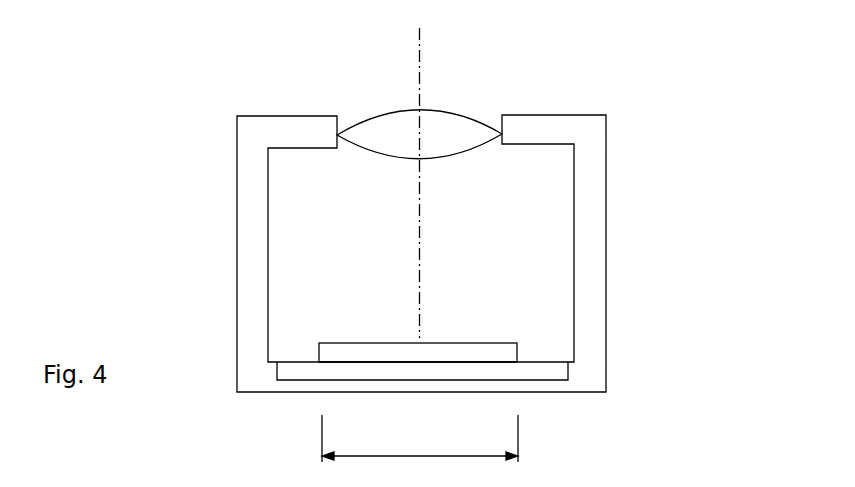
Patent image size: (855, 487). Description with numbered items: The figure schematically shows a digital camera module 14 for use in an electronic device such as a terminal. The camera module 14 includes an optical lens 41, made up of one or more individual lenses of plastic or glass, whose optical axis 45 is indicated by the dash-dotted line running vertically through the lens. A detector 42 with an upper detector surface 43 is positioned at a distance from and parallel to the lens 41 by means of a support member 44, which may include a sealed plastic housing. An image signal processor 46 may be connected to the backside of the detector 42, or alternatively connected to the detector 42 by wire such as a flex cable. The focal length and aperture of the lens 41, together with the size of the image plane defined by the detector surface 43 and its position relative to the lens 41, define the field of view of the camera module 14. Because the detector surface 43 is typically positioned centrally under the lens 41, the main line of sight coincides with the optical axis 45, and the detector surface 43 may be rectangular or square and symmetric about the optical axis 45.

The digital camera module 14 is at (672, 243).
The optical lens 41 is at (447, 110).
The detector 42 is at (508, 352).
The upper detector surface 43 is at (458, 331).
The support member 44 is at (236, 192).
The optical axis 45 is at (419, 78).
The image signal processor 46 is at (303, 373).